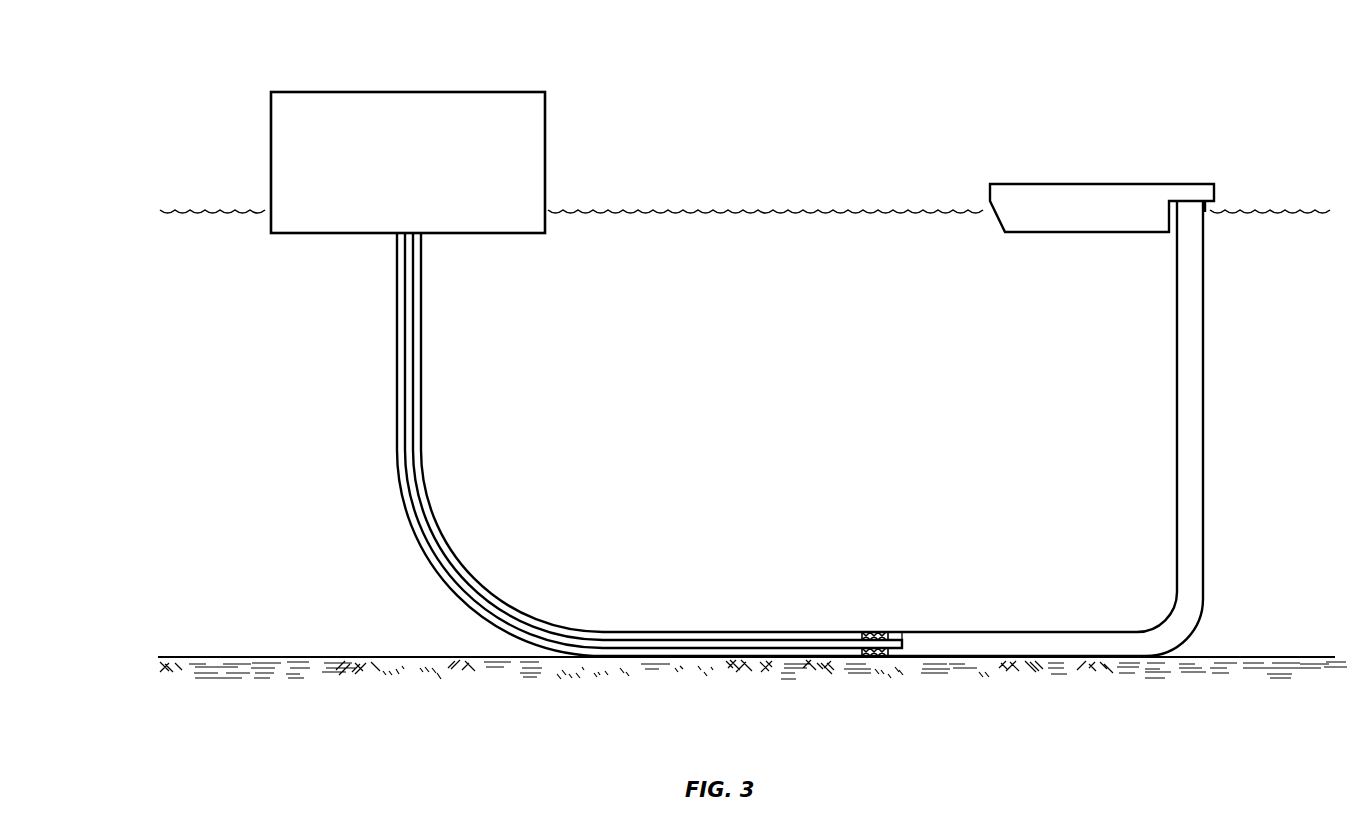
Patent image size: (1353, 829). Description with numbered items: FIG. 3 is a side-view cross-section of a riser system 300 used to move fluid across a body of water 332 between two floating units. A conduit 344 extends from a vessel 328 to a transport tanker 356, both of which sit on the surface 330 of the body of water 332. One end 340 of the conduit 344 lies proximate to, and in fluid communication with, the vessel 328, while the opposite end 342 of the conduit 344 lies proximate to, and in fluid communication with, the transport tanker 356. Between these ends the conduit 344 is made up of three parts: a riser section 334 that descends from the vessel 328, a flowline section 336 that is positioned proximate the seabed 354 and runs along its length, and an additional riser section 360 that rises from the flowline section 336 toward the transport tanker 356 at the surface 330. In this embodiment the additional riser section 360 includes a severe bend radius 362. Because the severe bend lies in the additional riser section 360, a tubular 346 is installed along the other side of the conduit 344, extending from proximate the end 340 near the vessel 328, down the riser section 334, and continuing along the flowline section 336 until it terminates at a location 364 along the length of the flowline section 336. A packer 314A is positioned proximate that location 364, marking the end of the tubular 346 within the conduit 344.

The riser system 300 is at (987, 497).
The packer 314A is at (882, 632).
The vessel 328 is at (269, 107).
The surface 330 is at (700, 210).
The body of water 332 is at (762, 378).
The riser section 334 is at (723, 444).
The flowline section 336 is at (690, 623).
The end 340 is at (423, 234).
The end 342 is at (1207, 204).
The conduit 344 is at (770, 444).
The tubular 346 is at (807, 643).
The seabed 354 is at (762, 719).
The transport tanker 356 is at (990, 192).
The additional riser section 360 is at (1209, 428).
The severe bend radius 362 is at (1162, 620).
The location 364 is at (910, 623).